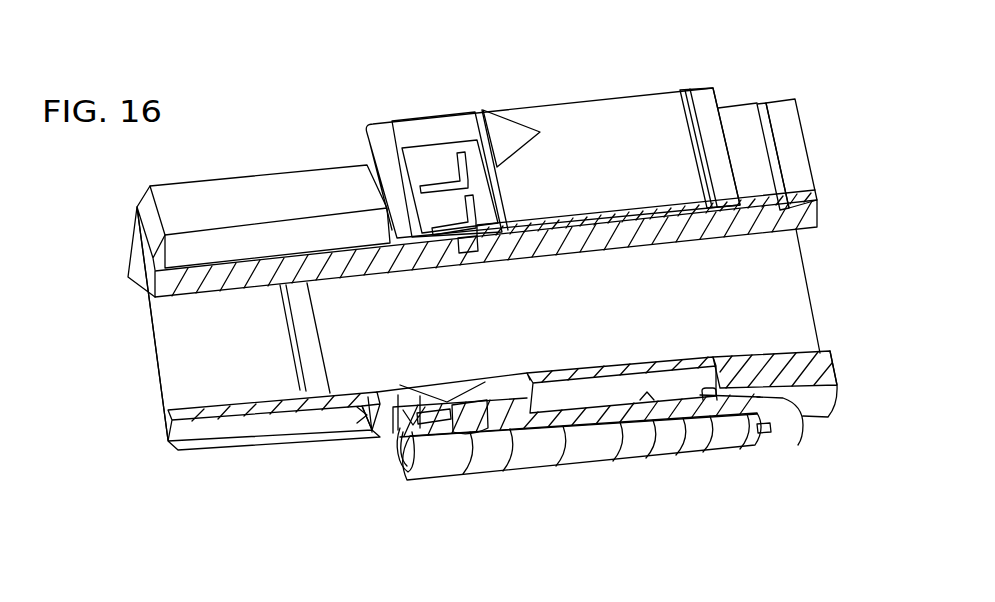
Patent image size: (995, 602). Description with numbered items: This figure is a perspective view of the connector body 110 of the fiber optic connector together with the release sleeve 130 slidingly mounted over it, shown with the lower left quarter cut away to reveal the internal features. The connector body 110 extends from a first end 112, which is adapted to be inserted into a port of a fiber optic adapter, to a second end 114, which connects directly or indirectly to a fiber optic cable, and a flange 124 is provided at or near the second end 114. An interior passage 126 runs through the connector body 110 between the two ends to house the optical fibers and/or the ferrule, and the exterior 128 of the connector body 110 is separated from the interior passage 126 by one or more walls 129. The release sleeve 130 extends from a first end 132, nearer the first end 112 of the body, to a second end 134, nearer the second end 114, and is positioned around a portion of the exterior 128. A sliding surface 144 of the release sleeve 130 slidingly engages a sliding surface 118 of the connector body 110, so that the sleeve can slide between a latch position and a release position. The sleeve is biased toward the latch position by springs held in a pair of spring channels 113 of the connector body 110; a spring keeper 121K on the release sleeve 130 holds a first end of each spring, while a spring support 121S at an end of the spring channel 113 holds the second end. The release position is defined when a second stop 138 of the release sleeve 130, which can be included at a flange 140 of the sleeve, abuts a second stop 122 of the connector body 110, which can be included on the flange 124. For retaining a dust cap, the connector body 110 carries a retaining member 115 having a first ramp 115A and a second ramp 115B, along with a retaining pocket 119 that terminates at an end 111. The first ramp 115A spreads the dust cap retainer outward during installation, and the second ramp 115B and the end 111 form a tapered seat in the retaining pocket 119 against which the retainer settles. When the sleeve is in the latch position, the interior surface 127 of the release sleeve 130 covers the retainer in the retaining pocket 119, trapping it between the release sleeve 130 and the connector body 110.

The connector body 110 is at (311, 454).
The end of the retaining pocket 111 is at (456, 418).
The first end 112 is at (153, 385).
The spring channel 113 is at (673, 382).
The second end 114 is at (840, 388).
The retaining member 115 is at (377, 397).
The first ramp 115A is at (366, 420).
The second ramp 115B is at (403, 450).
The sliding surface 118 is at (745, 108).
The retaining pocket 119 is at (413, 423).
The spring keeper 121K is at (528, 417).
The spring support 121S is at (712, 392).
The second stop 122 is at (756, 108).
The flange 124 is at (788, 116).
The interior passage 126 is at (776, 270).
The interior surface 127 is at (432, 415).
The exterior 128 is at (228, 198).
The wall 129 is at (212, 399).
The release sleeve 130 is at (597, 478).
The first end 132 is at (366, 129).
The second end 134 is at (800, 417).
The second stop 138 is at (760, 428).
The flange 140 is at (700, 92).
The sliding surface 144 is at (647, 393).